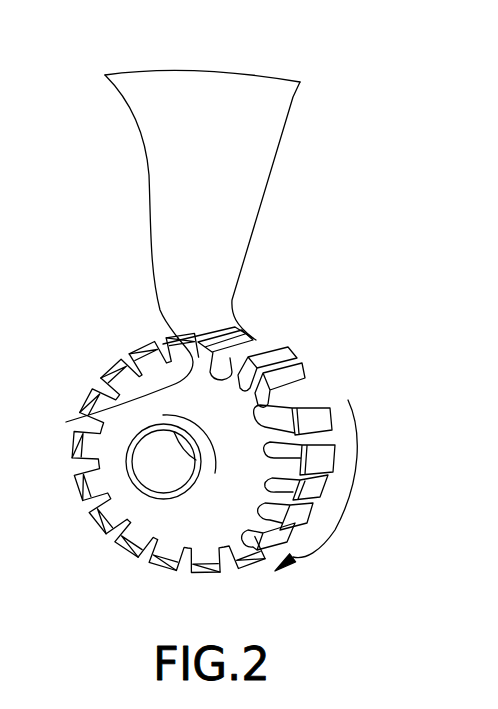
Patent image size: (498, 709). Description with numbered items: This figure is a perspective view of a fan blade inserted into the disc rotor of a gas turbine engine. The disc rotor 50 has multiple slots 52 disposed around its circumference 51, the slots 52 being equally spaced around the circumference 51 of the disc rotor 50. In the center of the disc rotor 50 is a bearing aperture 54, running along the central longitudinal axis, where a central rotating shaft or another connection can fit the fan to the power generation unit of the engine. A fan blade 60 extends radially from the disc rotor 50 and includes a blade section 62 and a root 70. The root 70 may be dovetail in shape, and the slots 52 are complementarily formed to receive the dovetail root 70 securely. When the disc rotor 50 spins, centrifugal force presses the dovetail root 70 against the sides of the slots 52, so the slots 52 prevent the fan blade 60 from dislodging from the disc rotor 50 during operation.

The disc rotor 50 is at (229, 432).
The circumference 51 is at (350, 494).
The slots 52 is at (322, 393).
The bearing aperture 54 is at (163, 462).
The fan blade 60 is at (259, 180).
The blade section 62 is at (228, 127).
The root 70 is at (66, 422).